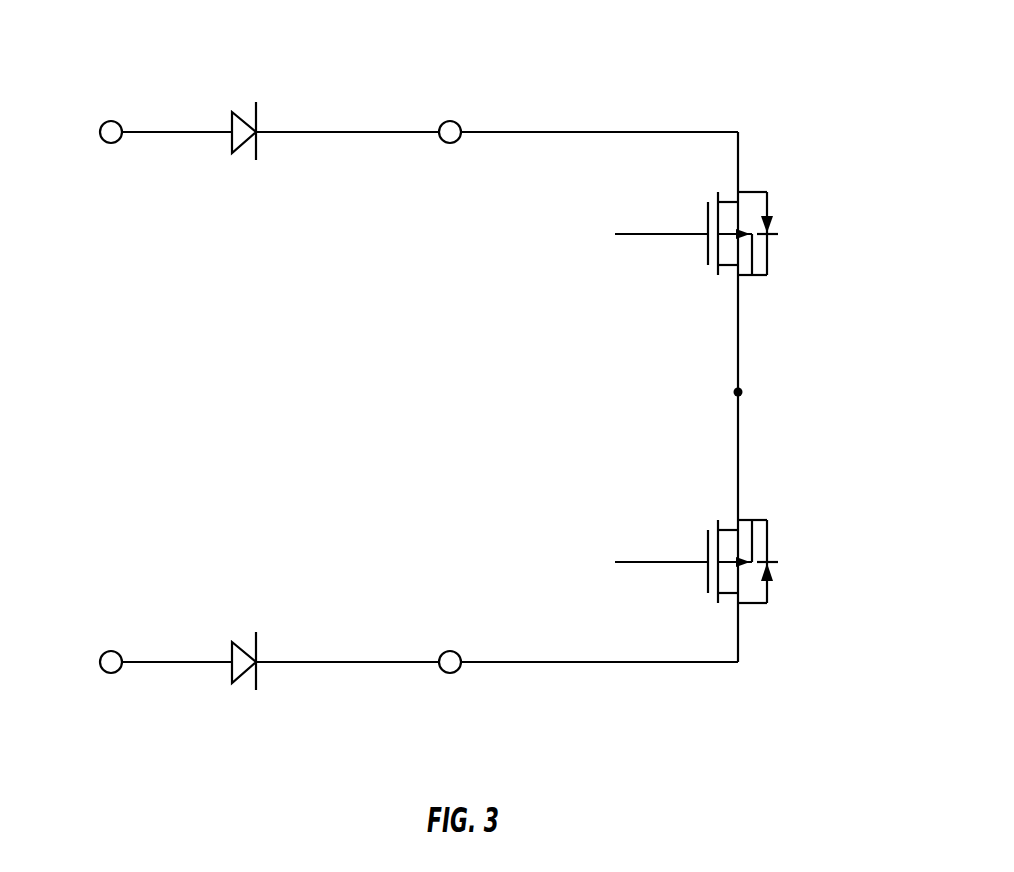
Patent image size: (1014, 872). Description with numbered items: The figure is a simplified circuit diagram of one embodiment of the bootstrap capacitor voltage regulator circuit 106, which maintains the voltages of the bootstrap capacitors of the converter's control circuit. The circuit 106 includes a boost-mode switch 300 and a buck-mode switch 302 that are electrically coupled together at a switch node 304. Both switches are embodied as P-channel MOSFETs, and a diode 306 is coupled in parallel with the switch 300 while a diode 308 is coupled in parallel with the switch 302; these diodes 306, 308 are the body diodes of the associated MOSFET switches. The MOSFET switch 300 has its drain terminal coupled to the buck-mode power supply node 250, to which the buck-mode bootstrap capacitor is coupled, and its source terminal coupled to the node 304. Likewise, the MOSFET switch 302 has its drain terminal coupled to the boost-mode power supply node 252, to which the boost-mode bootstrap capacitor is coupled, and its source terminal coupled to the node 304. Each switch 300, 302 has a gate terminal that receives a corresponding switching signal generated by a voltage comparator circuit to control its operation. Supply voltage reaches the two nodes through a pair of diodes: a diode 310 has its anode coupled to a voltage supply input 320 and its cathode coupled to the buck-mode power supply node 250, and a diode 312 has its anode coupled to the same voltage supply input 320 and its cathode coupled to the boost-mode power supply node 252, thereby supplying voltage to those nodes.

The bootstrap capacitor voltage regulator circuit 106 is at (783, 58).
The voltage supply input 320 is at (113, 121).
The diode 310 is at (235, 110).
The diode 312 is at (235, 640).
The buck-mode power supply node 250 is at (455, 122).
The boost-mode power supply node 252 is at (452, 673).
The boost-mode switch 300 is at (728, 228).
The buck-mode switch 302 is at (728, 557).
The switch node 304 is at (741, 389).
The diode 306 is at (773, 236).
The diode 308 is at (773, 563).